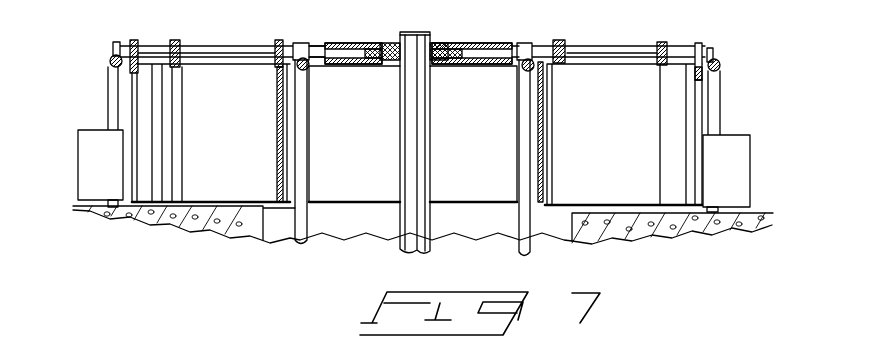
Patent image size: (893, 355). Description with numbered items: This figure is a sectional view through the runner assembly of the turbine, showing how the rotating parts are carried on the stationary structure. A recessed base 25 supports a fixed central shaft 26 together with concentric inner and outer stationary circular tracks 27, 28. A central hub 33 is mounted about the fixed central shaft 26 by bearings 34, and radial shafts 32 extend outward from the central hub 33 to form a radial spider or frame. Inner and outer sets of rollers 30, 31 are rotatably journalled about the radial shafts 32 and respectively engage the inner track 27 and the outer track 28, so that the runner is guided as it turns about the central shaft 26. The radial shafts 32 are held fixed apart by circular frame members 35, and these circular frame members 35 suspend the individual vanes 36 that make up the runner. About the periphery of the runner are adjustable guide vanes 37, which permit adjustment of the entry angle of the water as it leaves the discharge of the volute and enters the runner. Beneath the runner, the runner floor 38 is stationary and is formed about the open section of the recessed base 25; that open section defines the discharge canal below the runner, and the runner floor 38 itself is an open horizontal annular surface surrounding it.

The recessed base 25 is at (755, 212).
The fixed central shaft 26 is at (400, 133).
The inner stationary circular track 27 is at (303, 70).
The outer stationary circular track 28 is at (109, 60).
The inner set of rollers 30 is at (303, 43).
The outer set of rollers 31 is at (118, 42).
The radial shafts 32 is at (238, 45).
The central hub 33 is at (447, 45).
The bearings 34 is at (396, 43).
The circular frame members 35 is at (135, 40).
The vanes 36 is at (213, 200).
The adjustable guide vanes 37 is at (86, 160).
The runner floor 38 is at (242, 207).